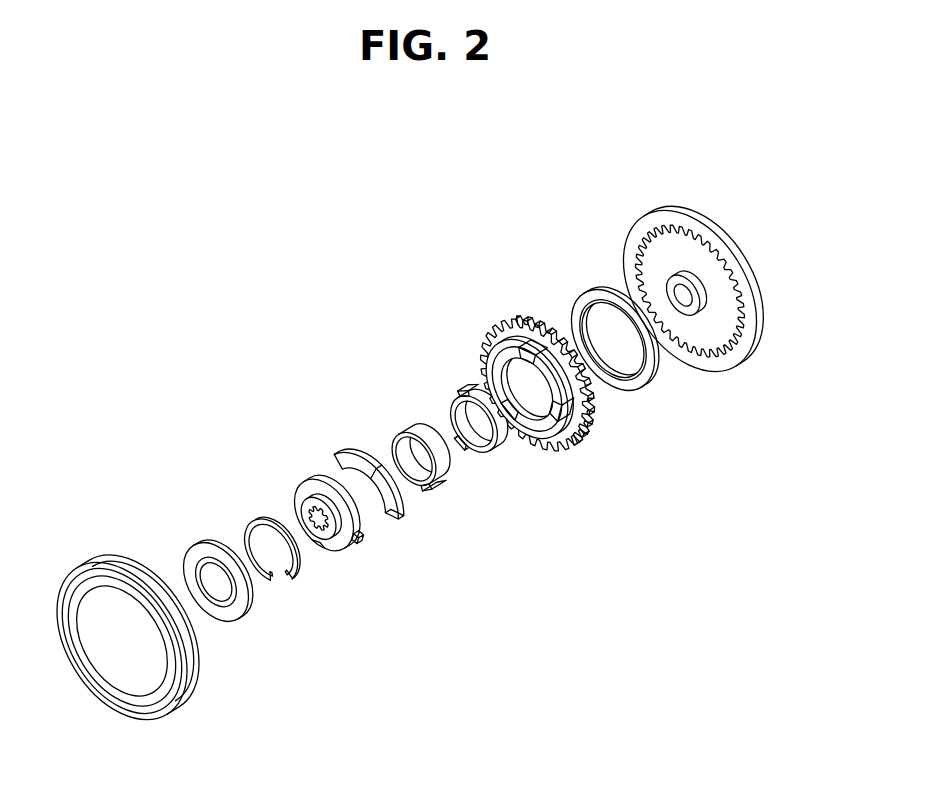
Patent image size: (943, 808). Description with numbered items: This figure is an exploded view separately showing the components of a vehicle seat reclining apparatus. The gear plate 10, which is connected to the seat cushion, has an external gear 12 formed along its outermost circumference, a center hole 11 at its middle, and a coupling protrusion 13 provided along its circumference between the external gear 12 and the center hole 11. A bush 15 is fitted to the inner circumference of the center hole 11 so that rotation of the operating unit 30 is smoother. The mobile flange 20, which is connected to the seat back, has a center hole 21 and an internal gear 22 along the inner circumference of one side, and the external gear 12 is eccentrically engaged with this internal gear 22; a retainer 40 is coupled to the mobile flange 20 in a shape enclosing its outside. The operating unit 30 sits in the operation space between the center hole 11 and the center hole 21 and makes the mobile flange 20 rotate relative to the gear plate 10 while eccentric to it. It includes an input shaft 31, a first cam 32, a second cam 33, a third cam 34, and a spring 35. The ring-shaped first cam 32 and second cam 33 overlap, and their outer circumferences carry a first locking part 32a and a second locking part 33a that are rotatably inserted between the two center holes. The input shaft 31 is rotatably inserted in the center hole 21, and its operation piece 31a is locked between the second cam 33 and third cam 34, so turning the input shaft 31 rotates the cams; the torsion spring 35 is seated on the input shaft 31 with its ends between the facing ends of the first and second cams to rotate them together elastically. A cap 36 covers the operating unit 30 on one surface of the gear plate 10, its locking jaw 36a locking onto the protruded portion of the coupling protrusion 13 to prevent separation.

The gear plate 10 is at (529, 391).
The center hole 11 is at (583, 442).
The external gear 12 is at (534, 318).
The coupling protrusion 13 is at (567, 450).
The bush 15 is at (642, 384).
The mobile flange 20 is at (697, 208).
The center hole 21 is at (700, 293).
The internal gear 22 is at (658, 252).
The operating unit 30 is at (423, 320).
The input shaft 31 is at (303, 481).
The operation piece 31a is at (357, 538).
The first cam 32 is at (412, 433).
The first locking part 32a is at (452, 464).
The second cam 33 is at (470, 397).
The second locking part 33a is at (463, 390).
The third cam 34 is at (355, 459).
The spring 35 is at (258, 522).
The cap 36 is at (193, 548).
The locking jaw 36a is at (243, 600).
The retainer 40 is at (95, 553).